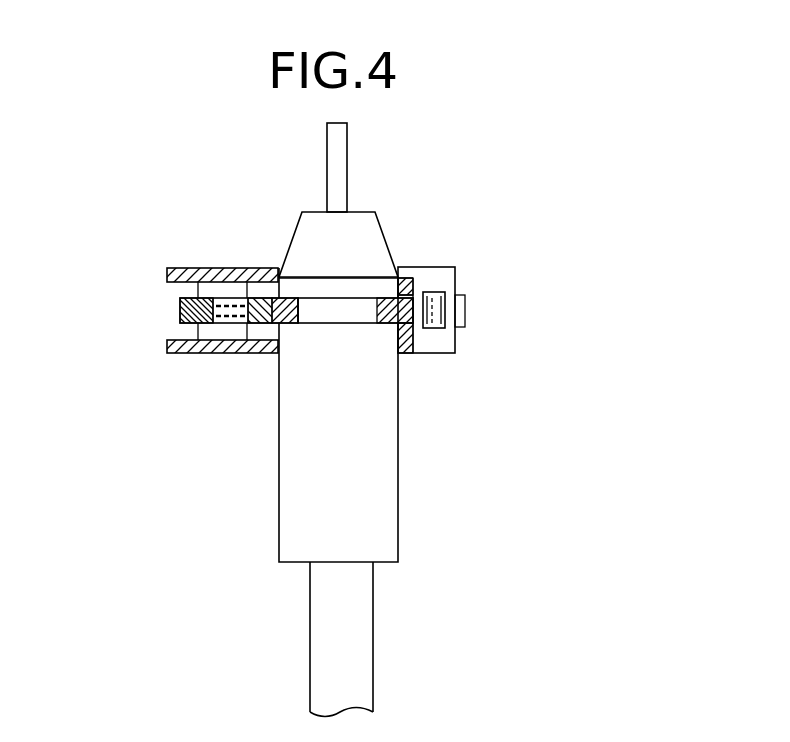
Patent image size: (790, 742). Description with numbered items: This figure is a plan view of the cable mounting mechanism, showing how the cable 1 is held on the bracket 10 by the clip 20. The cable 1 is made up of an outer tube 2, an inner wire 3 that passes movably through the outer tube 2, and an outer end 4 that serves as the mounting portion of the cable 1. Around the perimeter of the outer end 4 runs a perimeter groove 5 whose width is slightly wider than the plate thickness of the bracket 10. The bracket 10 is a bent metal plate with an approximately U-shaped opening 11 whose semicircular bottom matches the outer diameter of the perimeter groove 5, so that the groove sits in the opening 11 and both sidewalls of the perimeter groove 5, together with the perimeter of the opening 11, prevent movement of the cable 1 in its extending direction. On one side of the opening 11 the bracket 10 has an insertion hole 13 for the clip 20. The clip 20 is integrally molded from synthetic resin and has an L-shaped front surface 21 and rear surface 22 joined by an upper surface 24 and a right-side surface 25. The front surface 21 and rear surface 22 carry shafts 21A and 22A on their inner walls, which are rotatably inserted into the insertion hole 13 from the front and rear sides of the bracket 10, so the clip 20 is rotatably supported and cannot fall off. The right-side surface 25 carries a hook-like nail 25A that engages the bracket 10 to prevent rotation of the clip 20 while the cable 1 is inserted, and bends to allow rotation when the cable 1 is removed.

The cable 1 is at (411, 459).
The outer tube 2 is at (373, 597).
The inner wire 3 is at (338, 148).
The outer end 4 is at (400, 502).
The perimeter groove 5 is at (380, 307).
The bracket 10 is at (270, 325).
The opening 11 is at (313, 308).
The insertion hole 13 is at (210, 299).
The clip 20 is at (153, 358).
The front surface 21 is at (190, 353).
The shaft 21A is at (232, 325).
The rear surface 22 is at (210, 268).
The shaft 22A is at (243, 300).
The upper surface 24 is at (440, 275).
The right-side surface 25 is at (450, 308).
The nail 25A is at (440, 328).